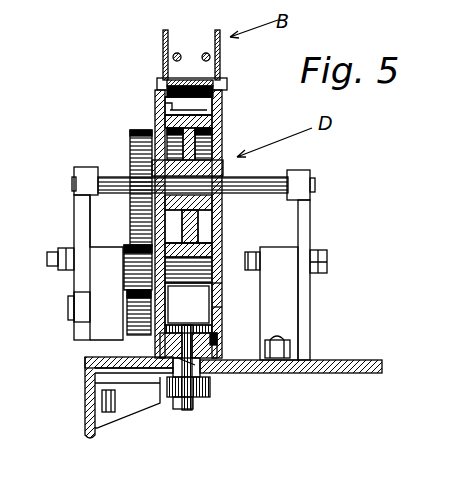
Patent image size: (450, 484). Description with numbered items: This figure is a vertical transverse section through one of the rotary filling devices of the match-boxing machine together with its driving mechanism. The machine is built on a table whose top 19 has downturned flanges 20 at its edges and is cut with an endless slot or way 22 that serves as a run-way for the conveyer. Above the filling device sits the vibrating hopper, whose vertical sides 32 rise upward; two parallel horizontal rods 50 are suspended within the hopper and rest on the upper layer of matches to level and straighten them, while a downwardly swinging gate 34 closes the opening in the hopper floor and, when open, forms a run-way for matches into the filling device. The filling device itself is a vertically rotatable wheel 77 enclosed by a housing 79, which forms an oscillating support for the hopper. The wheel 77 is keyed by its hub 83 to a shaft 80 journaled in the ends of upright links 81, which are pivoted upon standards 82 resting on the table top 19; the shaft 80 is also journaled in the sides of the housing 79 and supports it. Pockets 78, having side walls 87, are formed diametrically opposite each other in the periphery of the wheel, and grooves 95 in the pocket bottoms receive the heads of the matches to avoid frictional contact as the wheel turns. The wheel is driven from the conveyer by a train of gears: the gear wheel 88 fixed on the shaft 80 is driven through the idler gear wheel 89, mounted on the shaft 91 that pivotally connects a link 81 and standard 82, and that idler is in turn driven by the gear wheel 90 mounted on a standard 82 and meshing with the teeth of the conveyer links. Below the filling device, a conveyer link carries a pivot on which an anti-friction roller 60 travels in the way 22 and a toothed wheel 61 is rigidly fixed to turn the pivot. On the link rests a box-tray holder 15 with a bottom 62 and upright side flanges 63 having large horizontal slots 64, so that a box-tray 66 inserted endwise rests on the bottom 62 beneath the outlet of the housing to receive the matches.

The box-tray holder 15 is at (125, 333).
The table top 19 is at (360, 373).
The downturned flanges 20 is at (86, 434).
The endless slot or way 22 is at (222, 372).
The vertical sides 32 is at (221, 72).
The gate 34 is at (167, 80).
The horizontal rods 50 is at (205, 52).
The anti-friction roller 60 is at (160, 403).
The toothed wheel 61 is at (209, 396).
The bottom 62 is at (188, 304).
The side flanges 63 is at (218, 290).
The horizontal slots 64 is at (218, 307).
The box-tray 66 is at (218, 339).
The wheel 77 is at (222, 228).
The pockets 78 is at (222, 105).
The housing 79 is at (222, 243).
The shaft 80 is at (287, 182).
The upright links 81 is at (75, 215).
The standards 82 is at (290, 283).
The hub 83 is at (225, 150).
The side walls 87 is at (165, 103).
The gear wheel 88 is at (130, 146).
The idler gear wheel 89 is at (123, 267).
The gear wheel 90 is at (123, 308).
The shaft 91 is at (50, 258).
The grooves 95 is at (170, 115).